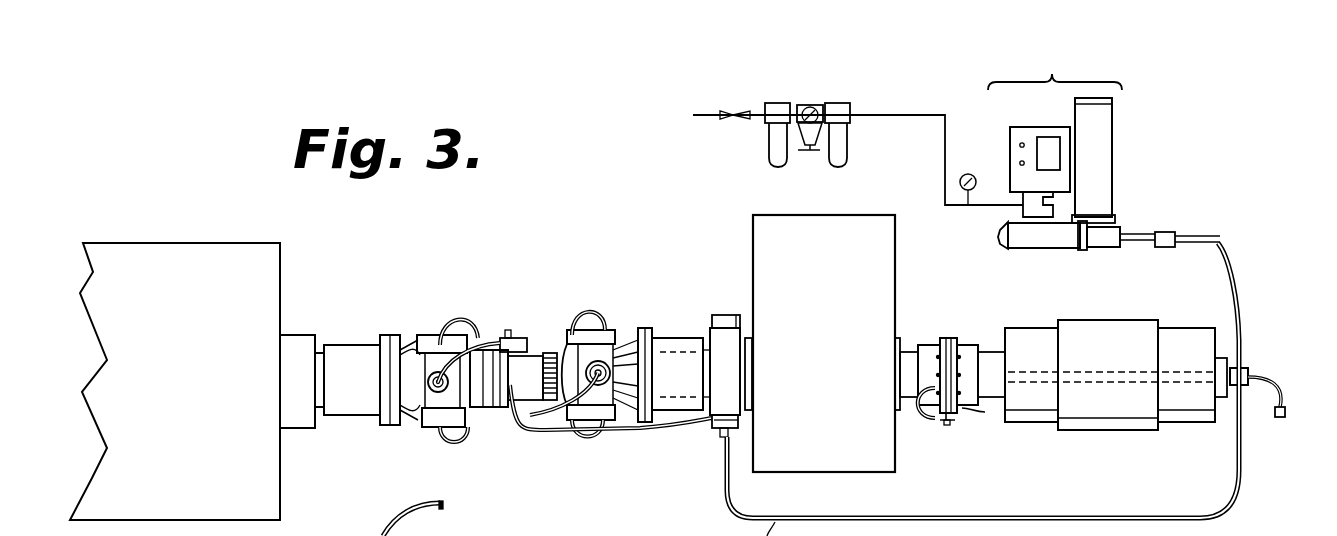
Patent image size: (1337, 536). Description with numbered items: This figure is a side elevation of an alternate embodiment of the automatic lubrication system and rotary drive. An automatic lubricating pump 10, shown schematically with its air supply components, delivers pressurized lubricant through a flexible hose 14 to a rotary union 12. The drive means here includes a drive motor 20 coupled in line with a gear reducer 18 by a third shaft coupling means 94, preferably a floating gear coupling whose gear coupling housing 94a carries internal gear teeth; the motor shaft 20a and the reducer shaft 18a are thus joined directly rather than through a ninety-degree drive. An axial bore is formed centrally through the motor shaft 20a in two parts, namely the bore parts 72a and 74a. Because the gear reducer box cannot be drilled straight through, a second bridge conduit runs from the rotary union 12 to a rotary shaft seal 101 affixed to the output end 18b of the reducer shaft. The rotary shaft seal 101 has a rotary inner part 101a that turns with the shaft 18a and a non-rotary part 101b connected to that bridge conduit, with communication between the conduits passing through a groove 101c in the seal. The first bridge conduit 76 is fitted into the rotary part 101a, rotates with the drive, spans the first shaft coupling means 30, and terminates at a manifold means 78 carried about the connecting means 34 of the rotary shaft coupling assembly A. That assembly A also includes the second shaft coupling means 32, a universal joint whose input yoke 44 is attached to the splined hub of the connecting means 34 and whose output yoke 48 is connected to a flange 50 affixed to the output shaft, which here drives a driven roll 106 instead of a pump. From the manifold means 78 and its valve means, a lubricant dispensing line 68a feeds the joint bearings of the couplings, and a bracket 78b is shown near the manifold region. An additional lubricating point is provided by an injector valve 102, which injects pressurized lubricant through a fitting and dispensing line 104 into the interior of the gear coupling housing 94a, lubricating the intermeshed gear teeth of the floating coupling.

The automatic lubricating pump 10 is at (956, 145).
The rotary union 12 is at (1241, 388).
The flexible hose 14 is at (1230, 270).
The gear reducer 18 is at (826, 271).
The reducer shaft 18a is at (912, 340).
The output end of shaft 18b is at (748, 334).
The drive motor 20 is at (1118, 361).
The motor shaft 20a is at (988, 352).
The first shaft coupling means 30 is at (622, 315).
The second shaft coupling means 32 is at (428, 322).
The connecting means 34 is at (493, 405).
The input yoke 44 is at (438, 518).
The output yoke 48 is at (413, 407).
The flange 50 is at (390, 333).
The lubricant dispensing line 68a is at (580, 535).
The axial bore part 72a is at (1180, 370).
The axial bore part 74a is at (1007, 387).
The bridge conduit 76 is at (633, 437).
The manifold means 78 is at (518, 330).
The bracket 78b is at (597, 535).
The third shaft coupling means 94 is at (933, 335).
The gear coupling housing 94a is at (955, 340).
The rotary shaft seal 101 is at (716, 312).
The rotary inner part 101a is at (742, 442).
The non-rotary part 101b is at (728, 385).
The groove 101c is at (716, 422).
The injector valve 102 is at (945, 425).
The dispensing line 104 is at (922, 415).
The driven roll 106 is at (217, 318).
The rotary shaft coupling assembly A is at (587, 298).